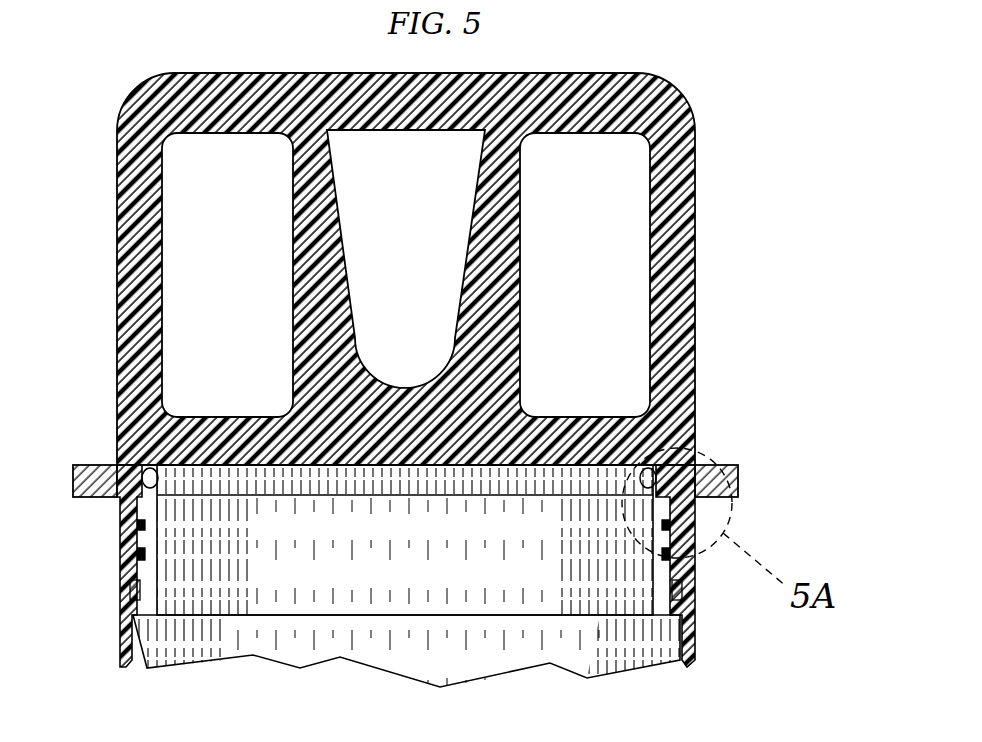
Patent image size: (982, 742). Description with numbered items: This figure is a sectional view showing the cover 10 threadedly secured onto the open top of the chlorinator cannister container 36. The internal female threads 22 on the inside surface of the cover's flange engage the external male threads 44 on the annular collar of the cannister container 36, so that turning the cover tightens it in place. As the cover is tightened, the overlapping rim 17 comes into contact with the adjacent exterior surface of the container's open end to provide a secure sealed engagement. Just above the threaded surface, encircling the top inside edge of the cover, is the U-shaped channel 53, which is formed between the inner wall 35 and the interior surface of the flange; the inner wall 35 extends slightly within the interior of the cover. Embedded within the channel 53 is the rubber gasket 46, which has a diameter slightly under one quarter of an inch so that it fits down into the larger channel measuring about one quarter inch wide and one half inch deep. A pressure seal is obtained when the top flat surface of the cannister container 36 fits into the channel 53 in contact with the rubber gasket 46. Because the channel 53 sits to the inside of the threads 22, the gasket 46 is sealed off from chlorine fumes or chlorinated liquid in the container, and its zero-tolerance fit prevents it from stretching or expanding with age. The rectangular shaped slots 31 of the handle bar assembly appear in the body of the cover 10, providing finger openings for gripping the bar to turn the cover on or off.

The cover 10 is at (714, 64).
The rectangular shaped slots 31 is at (229, 224).
The inner wall 35 is at (170, 470).
The rubber gasket 46 is at (122, 427).
The U-shaped channel 53 is at (118, 449).
The internal female threads 22 is at (134, 526).
The overlapping rim 17 is at (122, 588).
The external male threads 44 is at (139, 527).
The chlorinator cannister container 36 is at (650, 691).